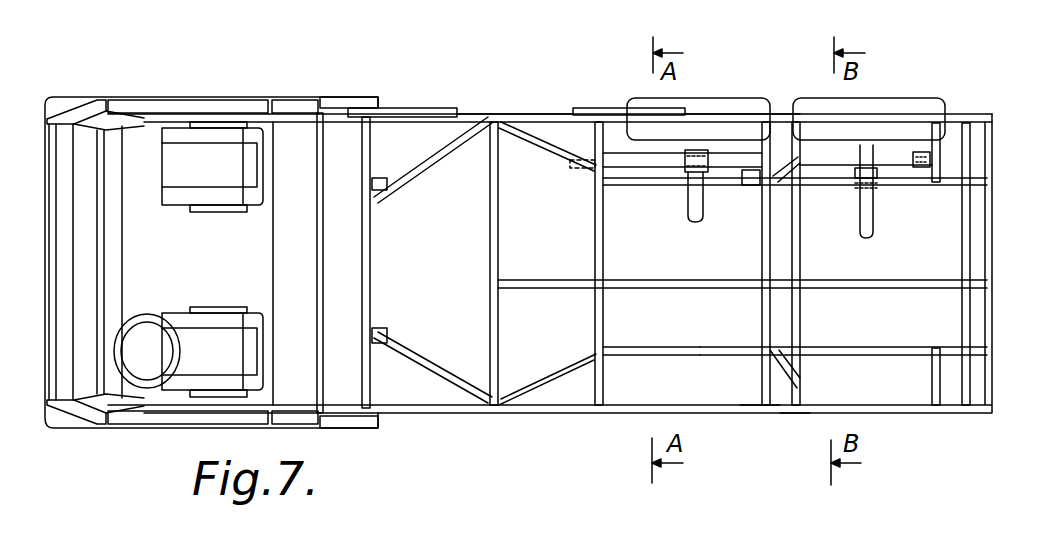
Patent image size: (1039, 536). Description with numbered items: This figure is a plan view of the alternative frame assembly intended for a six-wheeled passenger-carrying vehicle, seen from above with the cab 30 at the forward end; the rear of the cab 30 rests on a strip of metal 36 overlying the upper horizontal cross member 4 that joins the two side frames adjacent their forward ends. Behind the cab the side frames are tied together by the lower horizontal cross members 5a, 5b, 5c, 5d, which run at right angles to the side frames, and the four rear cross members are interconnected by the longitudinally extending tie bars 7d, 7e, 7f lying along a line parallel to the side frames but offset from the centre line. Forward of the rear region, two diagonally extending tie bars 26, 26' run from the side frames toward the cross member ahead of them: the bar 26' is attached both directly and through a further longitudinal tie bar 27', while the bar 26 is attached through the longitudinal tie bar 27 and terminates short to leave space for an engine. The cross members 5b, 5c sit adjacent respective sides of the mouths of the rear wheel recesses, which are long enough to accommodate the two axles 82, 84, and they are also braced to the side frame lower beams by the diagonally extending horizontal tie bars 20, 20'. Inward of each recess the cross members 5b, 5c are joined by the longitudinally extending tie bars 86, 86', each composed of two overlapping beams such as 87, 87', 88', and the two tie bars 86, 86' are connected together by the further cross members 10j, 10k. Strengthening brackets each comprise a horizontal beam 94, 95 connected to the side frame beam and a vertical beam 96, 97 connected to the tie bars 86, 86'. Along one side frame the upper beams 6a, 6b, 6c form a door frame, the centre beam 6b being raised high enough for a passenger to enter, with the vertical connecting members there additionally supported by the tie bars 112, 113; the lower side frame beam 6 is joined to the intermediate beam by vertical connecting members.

The cab 30 is at (211, 230).
The strip of metal 36 is at (363, 248).
The upper horizontal cross member 4 is at (370, 273).
The beam 6 is at (548, 412).
The upper beam 6a is at (782, 110).
The centre upper beam 6b is at (523, 112).
The upper beam 6c is at (336, 116).
The tie bar 113 is at (410, 107).
The tie bar 112 is at (597, 108).
The lower horizontal cross member 5a is at (990, 320).
The lower horizontal cross member 5b is at (967, 240).
The lower horizontal cross member 5c is at (595, 237).
The lower horizontal cross member 5d is at (490, 247).
The longitudinally extending tie bar 7d is at (985, 283).
The longitudinally extending tie bar 7e is at (645, 282).
The longitudinally extending tie bar 7f is at (527, 283).
The cross member 10j is at (765, 262).
The cross member 10k is at (800, 233).
The diagonally extending horizontal tie bar 20 is at (547, 373).
The diagonally extending horizontal tie bar 20' is at (547, 156).
The diagonally extending tie bar 26 is at (433, 362).
The diagonally extending tie bar 26' is at (433, 160).
The longitudinal tie bar 27 is at (395, 363).
The longitudinal tie bar 27' is at (411, 203).
The axle 82 is at (697, 214).
The axle 84 is at (870, 226).
The longitudinally extending tie bar 86 is at (651, 326).
The longitudinally extending tie bar 86' is at (701, 197).
The overlapping beam 87 is at (745, 330).
The overlapping beam 87' is at (717, 188).
The overlapping beam 88' is at (893, 192).
The horizontal beam 94 is at (793, 390).
The horizontal beam 95 is at (760, 378).
The vertical beam 96 is at (767, 343).
The vertical beam 97 is at (797, 357).